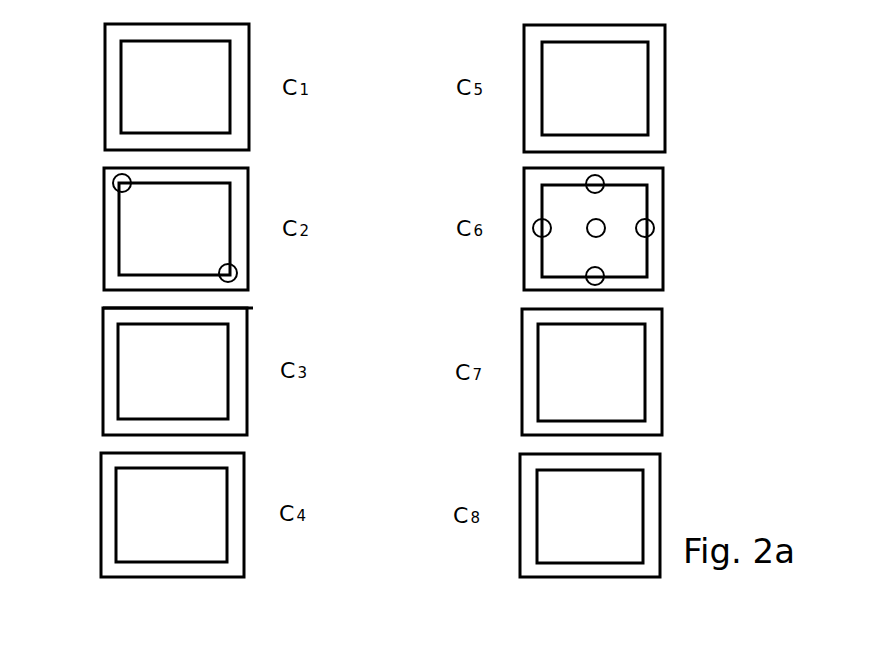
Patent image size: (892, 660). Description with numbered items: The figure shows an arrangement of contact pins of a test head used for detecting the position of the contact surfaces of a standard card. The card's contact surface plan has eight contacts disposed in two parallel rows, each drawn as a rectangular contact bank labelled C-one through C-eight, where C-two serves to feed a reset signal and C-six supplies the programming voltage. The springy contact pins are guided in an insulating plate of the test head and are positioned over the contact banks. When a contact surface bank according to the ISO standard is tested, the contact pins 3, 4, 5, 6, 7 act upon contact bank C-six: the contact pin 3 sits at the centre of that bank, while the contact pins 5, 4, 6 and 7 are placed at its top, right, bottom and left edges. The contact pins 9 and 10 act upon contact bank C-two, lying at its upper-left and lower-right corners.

The contact pin 3 is at (604, 233).
The contact pin 4 is at (654, 223).
The contact pin 5 is at (602, 178).
The contact pin 6 is at (603, 282).
The contact pin 7 is at (534, 232).
The contact pin 9 is at (113, 180).
The contact pin 10 is at (237, 275).